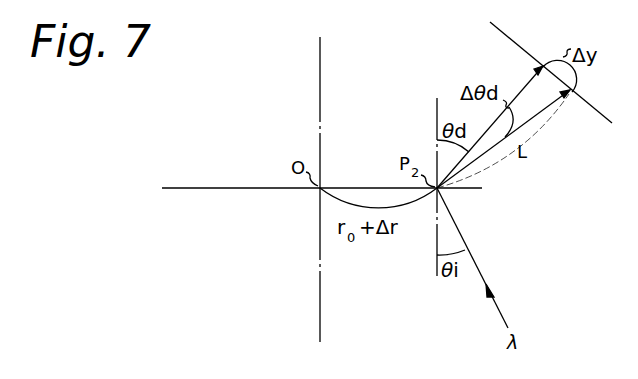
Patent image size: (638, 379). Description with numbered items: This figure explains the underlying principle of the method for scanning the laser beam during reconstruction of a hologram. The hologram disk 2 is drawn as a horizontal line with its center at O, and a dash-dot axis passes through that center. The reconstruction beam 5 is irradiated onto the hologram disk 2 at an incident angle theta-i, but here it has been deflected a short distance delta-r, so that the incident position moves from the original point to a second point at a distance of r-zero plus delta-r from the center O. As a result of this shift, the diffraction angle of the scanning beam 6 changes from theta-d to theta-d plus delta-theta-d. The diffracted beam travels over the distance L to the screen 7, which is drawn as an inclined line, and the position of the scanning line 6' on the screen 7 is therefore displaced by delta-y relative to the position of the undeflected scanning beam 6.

The hologram disk 2 is at (213, 190).
The reconstruction beam 5 is at (499, 308).
The scanning beam 6 is at (490, 117).
The scanning line 6' is at (511, 139).
The screen 7 is at (592, 109).